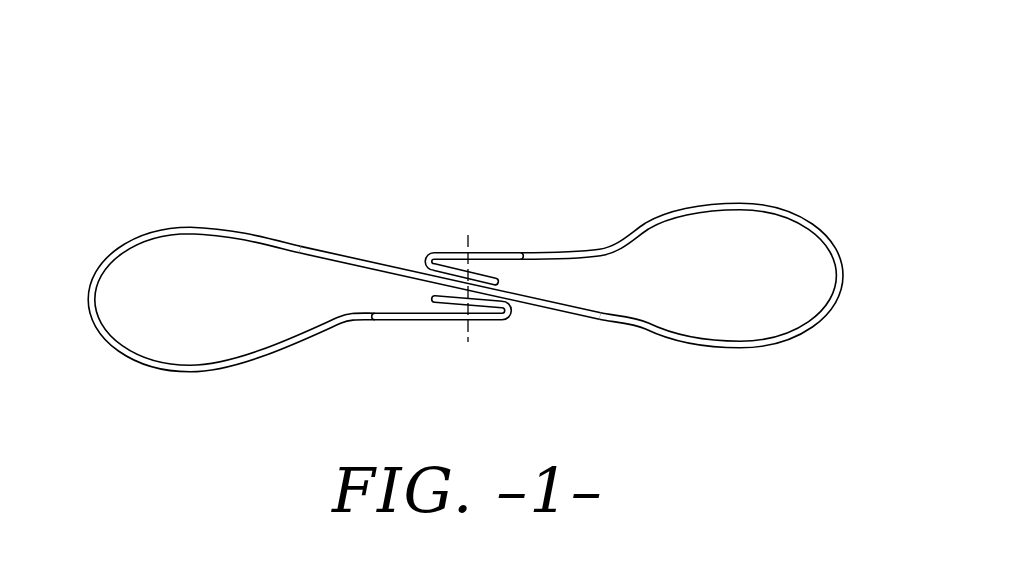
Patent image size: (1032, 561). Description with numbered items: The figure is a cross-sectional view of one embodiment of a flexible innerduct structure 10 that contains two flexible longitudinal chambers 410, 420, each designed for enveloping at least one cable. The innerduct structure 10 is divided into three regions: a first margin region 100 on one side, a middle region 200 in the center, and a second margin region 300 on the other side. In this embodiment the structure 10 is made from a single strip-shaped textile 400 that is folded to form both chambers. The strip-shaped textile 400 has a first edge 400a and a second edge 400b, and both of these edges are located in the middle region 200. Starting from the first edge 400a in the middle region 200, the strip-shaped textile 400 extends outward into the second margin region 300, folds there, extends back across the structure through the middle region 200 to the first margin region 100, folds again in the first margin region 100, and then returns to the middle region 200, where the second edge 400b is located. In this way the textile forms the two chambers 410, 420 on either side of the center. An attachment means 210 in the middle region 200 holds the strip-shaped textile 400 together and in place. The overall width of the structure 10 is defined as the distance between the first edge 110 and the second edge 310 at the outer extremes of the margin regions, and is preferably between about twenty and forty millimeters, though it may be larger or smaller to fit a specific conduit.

The innerduct structure 10 is at (474, 200).
The first margin region 100 is at (287, 157).
The first edge 110 is at (52, 180).
The middle region 200 is at (450, 256).
The attachment means 210 is at (472, 333).
The second margin region 300 is at (852, 157).
The second edge 310 is at (892, 182).
The strip-shaped textile 400 is at (491, 244).
The first edge of the strip-shaped textile 400a is at (497, 278).
The second edge of the strip-shaped textile 400b is at (430, 292).
The flexible longitudinal chamber 410 is at (212, 308).
The flexible longitudinal chamber 420 is at (765, 287).